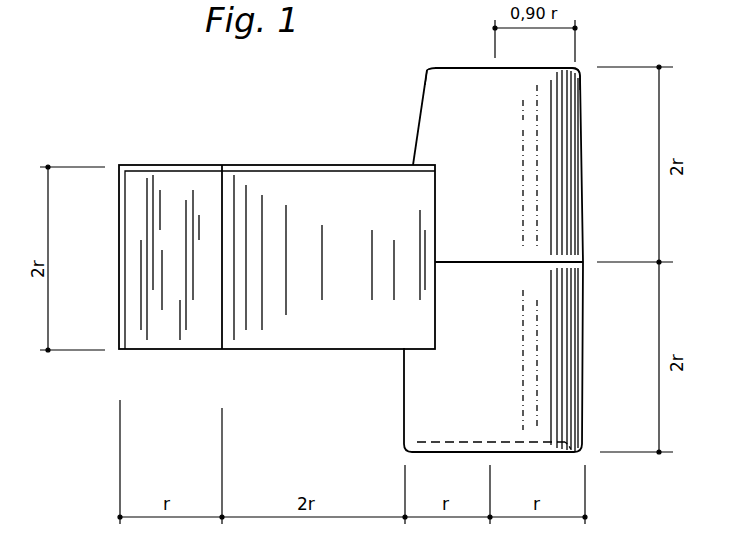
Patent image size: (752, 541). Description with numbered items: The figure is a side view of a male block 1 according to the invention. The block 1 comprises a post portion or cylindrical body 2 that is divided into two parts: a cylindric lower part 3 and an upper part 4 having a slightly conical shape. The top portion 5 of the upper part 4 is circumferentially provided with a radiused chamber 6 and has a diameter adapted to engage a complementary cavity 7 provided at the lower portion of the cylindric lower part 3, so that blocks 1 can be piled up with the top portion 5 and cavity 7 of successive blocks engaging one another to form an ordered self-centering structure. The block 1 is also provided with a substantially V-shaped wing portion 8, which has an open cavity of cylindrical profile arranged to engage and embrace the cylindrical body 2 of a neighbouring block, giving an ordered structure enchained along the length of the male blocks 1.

The male block 1 is at (372, 150).
The cylindrical body 2 is at (592, 250).
The cylindric lower part 3 is at (585, 325).
The upper part 4 is at (582, 148).
The top portion 5 is at (536, 68).
The radiused chamber 6 is at (418, 70).
The complementary cavity 7 is at (422, 446).
The wing portion 8 is at (258, 163).